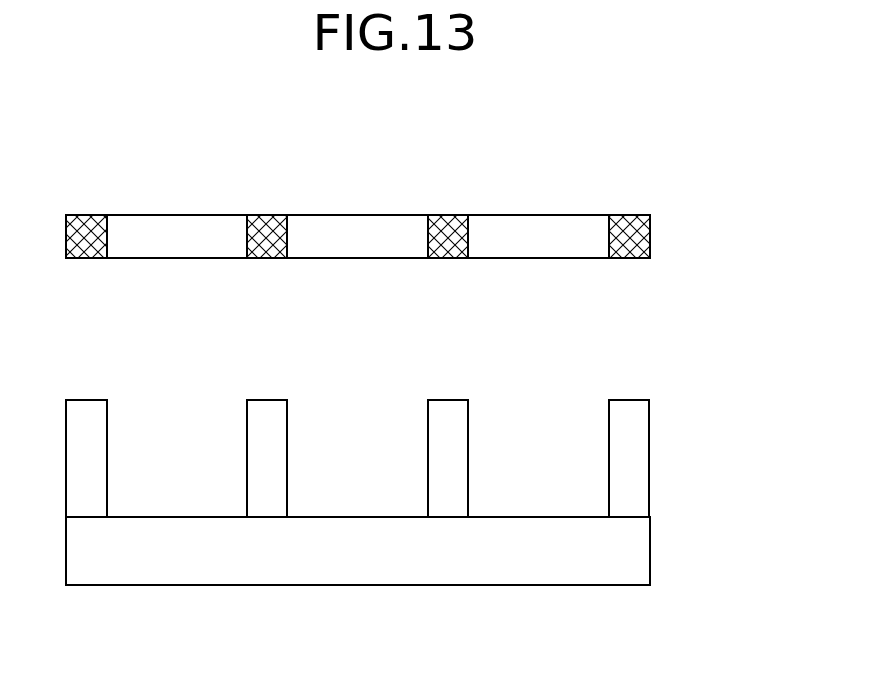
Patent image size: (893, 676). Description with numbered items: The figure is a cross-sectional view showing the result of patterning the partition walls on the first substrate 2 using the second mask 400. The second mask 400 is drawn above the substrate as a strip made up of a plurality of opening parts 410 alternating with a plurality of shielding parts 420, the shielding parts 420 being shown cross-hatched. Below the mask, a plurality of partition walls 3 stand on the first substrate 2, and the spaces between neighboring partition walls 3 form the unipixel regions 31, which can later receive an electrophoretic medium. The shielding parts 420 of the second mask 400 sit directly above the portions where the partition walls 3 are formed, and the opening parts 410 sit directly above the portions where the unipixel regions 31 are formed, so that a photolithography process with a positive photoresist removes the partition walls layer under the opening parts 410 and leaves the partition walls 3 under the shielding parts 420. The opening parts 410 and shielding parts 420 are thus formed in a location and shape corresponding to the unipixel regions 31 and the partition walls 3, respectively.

The second mask 400 is at (645, 232).
The opening parts 410 is at (545, 226).
The shielding parts 420 is at (442, 213).
The first substrate 2 is at (642, 552).
The partition walls 3 is at (642, 465).
The unipixel regions 31 is at (540, 437).